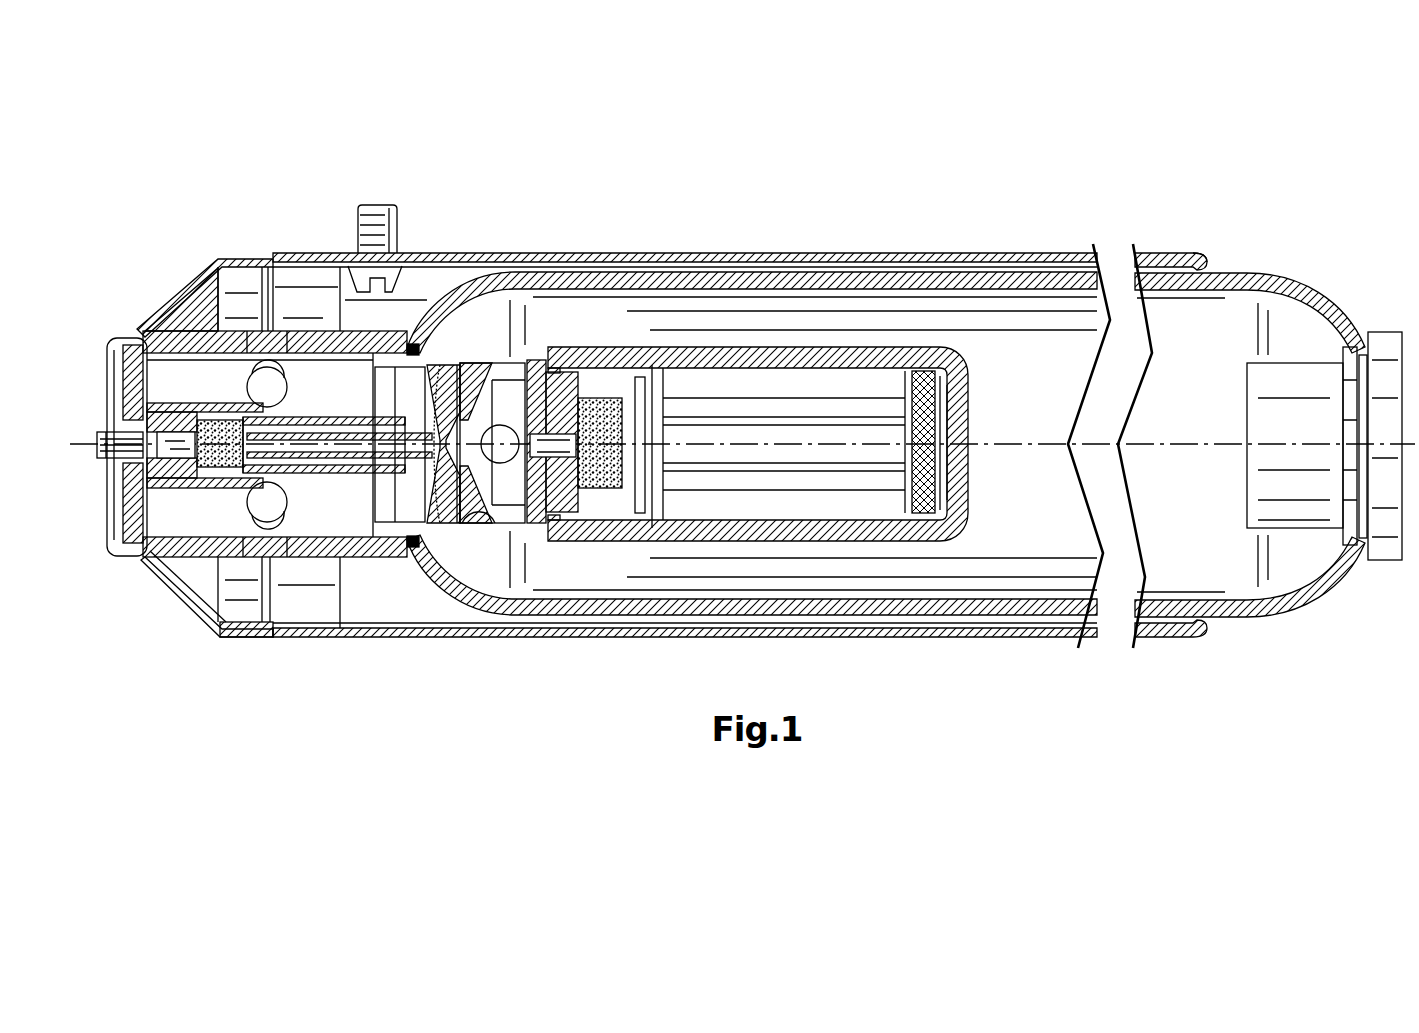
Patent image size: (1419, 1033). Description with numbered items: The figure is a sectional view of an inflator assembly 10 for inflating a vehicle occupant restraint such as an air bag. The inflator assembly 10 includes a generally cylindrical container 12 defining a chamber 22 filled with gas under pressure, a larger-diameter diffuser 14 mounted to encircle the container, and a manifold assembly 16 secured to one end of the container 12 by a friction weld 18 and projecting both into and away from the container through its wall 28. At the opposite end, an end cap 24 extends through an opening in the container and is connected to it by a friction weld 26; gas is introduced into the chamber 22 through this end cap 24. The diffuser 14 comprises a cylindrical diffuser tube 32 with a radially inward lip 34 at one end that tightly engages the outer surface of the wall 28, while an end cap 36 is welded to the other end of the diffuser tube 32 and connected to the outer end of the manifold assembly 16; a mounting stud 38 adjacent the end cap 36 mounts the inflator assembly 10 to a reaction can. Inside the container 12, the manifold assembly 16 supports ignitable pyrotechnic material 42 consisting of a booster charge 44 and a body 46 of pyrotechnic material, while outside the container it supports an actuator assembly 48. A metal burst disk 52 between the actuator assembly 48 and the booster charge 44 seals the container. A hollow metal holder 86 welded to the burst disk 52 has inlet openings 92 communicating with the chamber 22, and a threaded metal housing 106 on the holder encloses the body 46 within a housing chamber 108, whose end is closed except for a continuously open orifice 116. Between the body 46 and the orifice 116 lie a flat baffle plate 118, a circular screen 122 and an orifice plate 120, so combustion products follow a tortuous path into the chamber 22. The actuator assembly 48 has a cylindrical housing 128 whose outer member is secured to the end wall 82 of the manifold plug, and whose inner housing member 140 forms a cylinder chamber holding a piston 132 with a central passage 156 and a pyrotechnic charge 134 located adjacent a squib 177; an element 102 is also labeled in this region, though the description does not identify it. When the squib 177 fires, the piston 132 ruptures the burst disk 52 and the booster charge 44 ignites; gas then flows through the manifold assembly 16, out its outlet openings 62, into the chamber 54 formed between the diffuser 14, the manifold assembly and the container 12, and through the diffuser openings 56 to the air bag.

The inflator assembly 10 is at (1122, 153).
The container 12 is at (983, 277).
The diffuser 14 is at (805, 254).
The manifold assembly 16 is at (308, 331).
The friction weld 18 is at (378, 412).
The chamber 22 is at (1030, 318).
The end cap 24 is at (1385, 547).
The friction weld 26 is at (1360, 344).
The wall 28 is at (1160, 274).
The diffuser tube 32 is at (927, 256).
The lip 34 is at (1207, 266).
The end cap 36 is at (165, 577).
The mounting stud 38 is at (384, 210).
The ignitable pyrotechnic material 42 is at (708, 367).
The booster charge 44 is at (617, 443).
The body of pyrotechnic material 46 is at (808, 386).
The actuator assembly 48 is at (193, 401).
The burst disk 52 is at (440, 412).
The chamber 54 is at (452, 620).
The openings 56 is at (847, 640).
The outlet openings 62 is at (260, 555).
The end wall 82 is at (133, 512).
The holder 86 is at (605, 420).
The inlet openings 92 is at (510, 523).
The piston insert 102 is at (543, 443).
The housing 106 is at (740, 548).
The housing chamber 108 is at (656, 517).
The orifice 116 is at (957, 453).
The baffle plate 118 is at (927, 370).
The orifice plate 120 is at (937, 388).
The screen 122 is at (940, 420).
The housing 128 is at (188, 494).
The piston 132 is at (301, 462).
The pyrotechnic charge 134 is at (225, 428).
The inner housing member 140 is at (330, 477).
The central passage 156 is at (322, 440).
The squib 177 is at (178, 440).